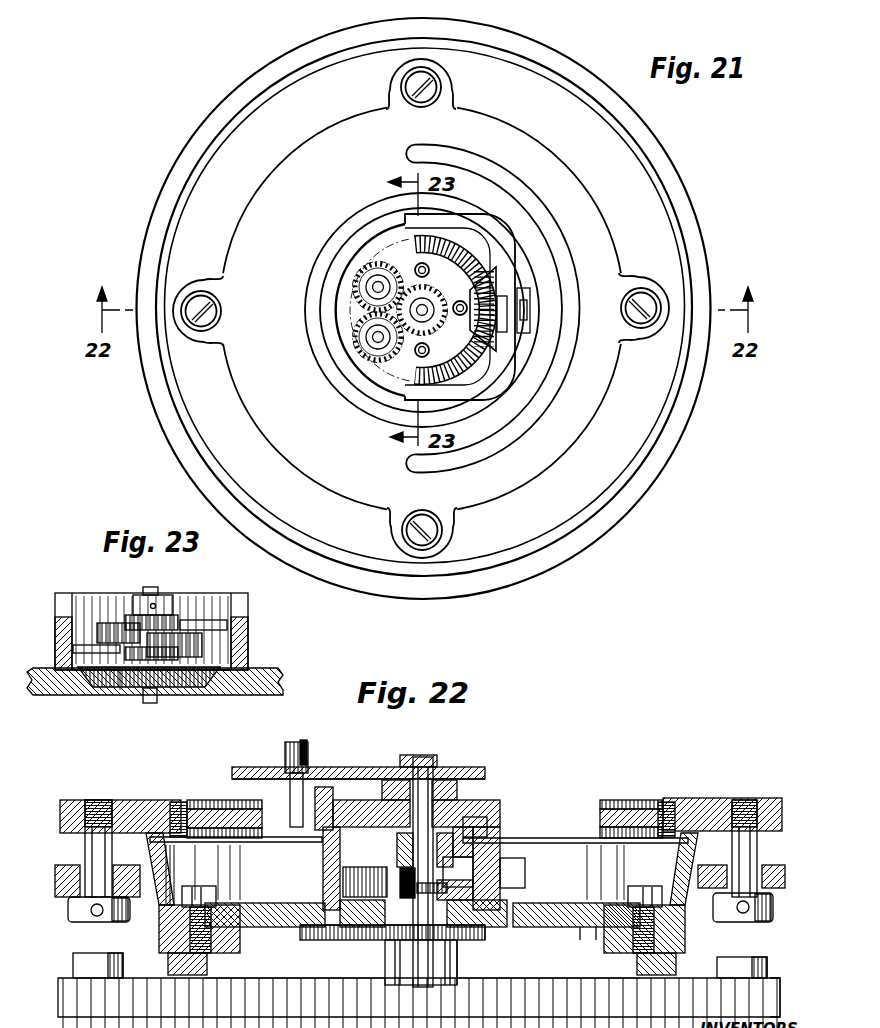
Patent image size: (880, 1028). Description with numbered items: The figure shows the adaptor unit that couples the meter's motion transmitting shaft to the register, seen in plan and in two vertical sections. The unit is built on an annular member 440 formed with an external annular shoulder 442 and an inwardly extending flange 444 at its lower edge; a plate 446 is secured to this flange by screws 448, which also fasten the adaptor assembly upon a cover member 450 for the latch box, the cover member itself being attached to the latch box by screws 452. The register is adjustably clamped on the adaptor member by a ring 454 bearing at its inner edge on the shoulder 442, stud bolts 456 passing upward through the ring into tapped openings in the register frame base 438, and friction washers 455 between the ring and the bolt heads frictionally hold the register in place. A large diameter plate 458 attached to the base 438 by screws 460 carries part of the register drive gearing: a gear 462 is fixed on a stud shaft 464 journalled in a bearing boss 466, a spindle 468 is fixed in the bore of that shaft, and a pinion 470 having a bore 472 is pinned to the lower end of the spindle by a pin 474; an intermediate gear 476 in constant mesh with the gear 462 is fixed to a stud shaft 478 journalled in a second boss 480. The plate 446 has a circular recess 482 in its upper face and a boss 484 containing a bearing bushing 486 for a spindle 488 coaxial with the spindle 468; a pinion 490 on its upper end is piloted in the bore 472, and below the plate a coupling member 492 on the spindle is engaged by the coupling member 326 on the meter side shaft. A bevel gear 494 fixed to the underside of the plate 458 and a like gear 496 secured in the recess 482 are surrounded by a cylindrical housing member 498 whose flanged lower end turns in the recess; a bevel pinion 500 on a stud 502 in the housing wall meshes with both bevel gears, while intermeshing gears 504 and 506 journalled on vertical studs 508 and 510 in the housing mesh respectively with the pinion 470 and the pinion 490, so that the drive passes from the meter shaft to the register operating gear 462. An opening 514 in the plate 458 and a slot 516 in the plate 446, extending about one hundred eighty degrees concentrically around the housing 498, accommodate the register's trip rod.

In FIG. 22, the coupling member 326 is at (405, 984).
In FIG. 22, the frame base 438 is at (703, 798).
In FIG. 21, the annular member 440 is at (702, 372).
In FIG. 22, the annular member 440 is at (143, 900).
In FIG. 22, the external annular shoulder 442 is at (148, 858).
In FIG. 22, the inwardly extending flange 444 is at (189, 979).
In FIG. 21, the plate 446 is at (350, 492).
In FIG. 22, the plate 446 is at (563, 930).
In FIG. 23, the plate 446 is at (36, 697).
In FIG. 21, the screws 448 is at (443, 92).
In FIG. 22, the screws 448 is at (200, 887).
In FIG. 22, the cover member 450 is at (781, 985).
In FIG. 22, the screws 452 is at (76, 956).
In FIG. 22, the ring 454 is at (56, 868).
In FIG. 22, the friction washers 455 is at (113, 908).
In FIG. 22, the stud bolts 456 is at (87, 855).
In FIG. 22, the large diameter plate 458 is at (610, 811).
In FIG. 22, the screws 460 is at (168, 803).
In FIG. 22, the gear 462 is at (482, 771).
In FIG. 22, the stud shaft 464 is at (485, 776).
In FIG. 22, the bearing boss 466 is at (414, 762).
In FIG. 22, the spindle 468 is at (434, 766).
In FIG. 23, the spindle 468 is at (156, 594).
In FIG. 22, the pinion 470 is at (472, 810).
In FIG. 23, the pinion 470 is at (176, 605).
In FIG. 22, the bore 472 is at (515, 847).
In FIG. 22, the pin 474 is at (333, 806).
In FIG. 22, the intermediate gear 476 is at (352, 768).
In FIG. 22, the stud shaft 478 is at (291, 772).
In FIG. 22, the second boss 480 is at (190, 806).
In FIG. 22, the circular recess 482 is at (318, 979).
In FIG. 22, the boss 484 is at (390, 938).
In FIG. 22, the bearing bushing 486 is at (473, 938).
In FIG. 22, the spindle 488 is at (389, 953).
In FIG. 23, the spindle 488 is at (153, 703).
In FIG. 21, the pinion 490 is at (429, 271).
In FIG. 22, the pinion 490 is at (515, 878).
In FIG. 23, the pinion 490 is at (127, 677).
In FIG. 22, the coupling member 492 is at (459, 960).
In FIG. 22, the bevel gear 494 is at (316, 852).
In FIG. 21, the bevel gear 496 is at (490, 368).
In FIG. 22, the bevel gear 496 is at (345, 936).
In FIG. 23, the bevel gear 496 is at (198, 684).
In FIG. 21, the cylindrical housing member 498 is at (478, 401).
In FIG. 22, the cylindrical housing member 498 is at (342, 888).
In FIG. 23, the cylindrical housing member 498 is at (248, 656).
In FIG. 21, the bevel pinion 500 is at (429, 350).
In FIG. 22, the bevel pinion 500 is at (515, 812).
In FIG. 22, the stud 502 is at (535, 865).
In FIG. 21, the gear 504 is at (355, 315).
In FIG. 21, the gear 506 is at (356, 251).
In FIG. 22, the gear 506 is at (340, 872).
In FIG. 23, the gear 506 is at (244, 643).
In FIG. 21, the vertical stud 508 is at (360, 340).
In FIG. 23, the vertical stud 508 is at (111, 622).
In FIG. 21, the vertical stud 510 is at (366, 292).
In FIG. 22, the opening 514 is at (583, 800).
In FIG. 21, the slot 516 is at (568, 242).
In FIG. 22, the slot 516 is at (586, 930).